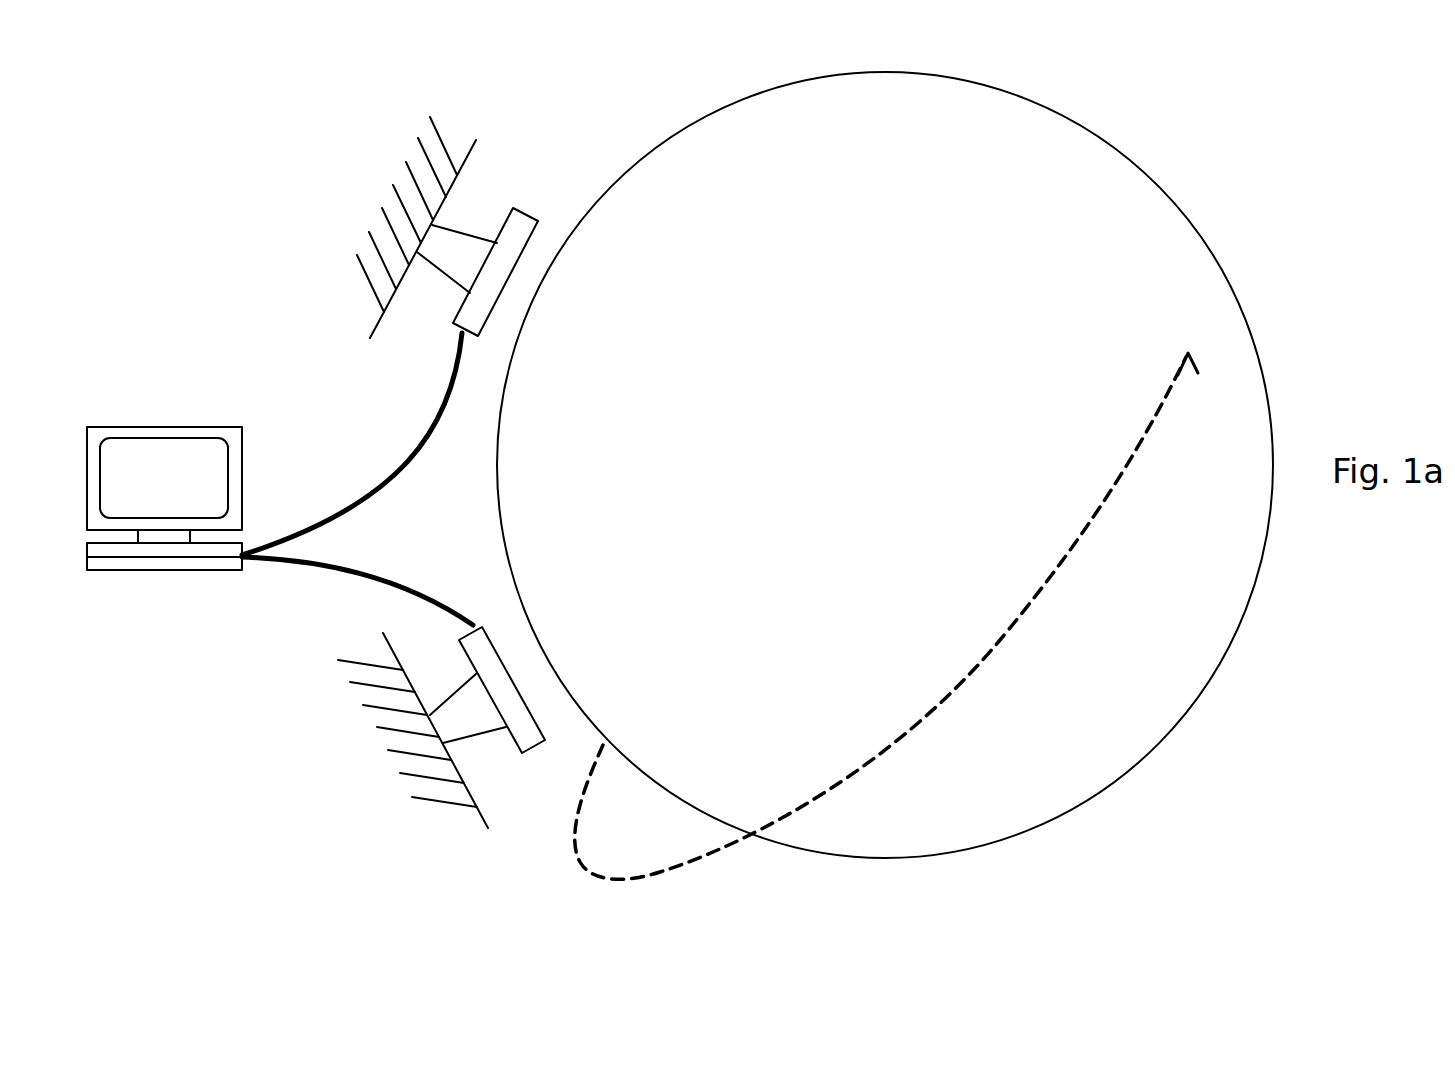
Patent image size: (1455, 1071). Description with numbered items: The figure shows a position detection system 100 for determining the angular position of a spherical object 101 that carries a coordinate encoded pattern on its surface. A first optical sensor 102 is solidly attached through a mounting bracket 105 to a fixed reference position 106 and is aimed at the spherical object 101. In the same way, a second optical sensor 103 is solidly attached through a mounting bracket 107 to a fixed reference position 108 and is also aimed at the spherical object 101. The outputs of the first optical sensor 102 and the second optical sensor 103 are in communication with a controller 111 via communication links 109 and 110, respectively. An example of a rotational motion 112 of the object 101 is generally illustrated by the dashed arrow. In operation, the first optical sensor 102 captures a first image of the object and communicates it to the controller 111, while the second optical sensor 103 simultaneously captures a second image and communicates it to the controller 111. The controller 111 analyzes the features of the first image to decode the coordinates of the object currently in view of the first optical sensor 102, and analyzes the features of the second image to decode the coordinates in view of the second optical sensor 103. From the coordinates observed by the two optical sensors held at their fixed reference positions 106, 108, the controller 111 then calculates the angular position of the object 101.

The position detection system 100 is at (302, 288).
The spherical object 101 is at (872, 171).
The first optical sensor 102 is at (526, 215).
The second optical sensor 103 is at (471, 626).
The mounting bracket 105 is at (443, 277).
The fixed reference position 106 is at (386, 208).
The mounting bracket 107 is at (487, 727).
The fixed reference position 108 is at (372, 727).
The communication link 109 is at (437, 423).
The communication link 110 is at (383, 570).
The controller 111 is at (163, 570).
The rotational motion 112 is at (1168, 458).